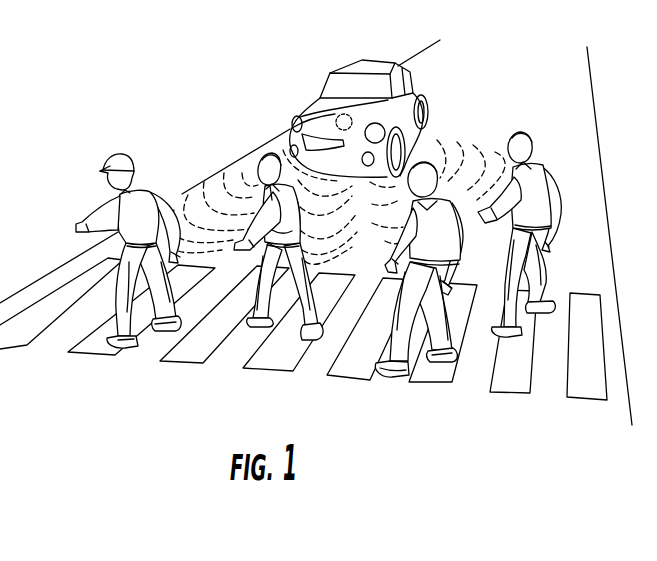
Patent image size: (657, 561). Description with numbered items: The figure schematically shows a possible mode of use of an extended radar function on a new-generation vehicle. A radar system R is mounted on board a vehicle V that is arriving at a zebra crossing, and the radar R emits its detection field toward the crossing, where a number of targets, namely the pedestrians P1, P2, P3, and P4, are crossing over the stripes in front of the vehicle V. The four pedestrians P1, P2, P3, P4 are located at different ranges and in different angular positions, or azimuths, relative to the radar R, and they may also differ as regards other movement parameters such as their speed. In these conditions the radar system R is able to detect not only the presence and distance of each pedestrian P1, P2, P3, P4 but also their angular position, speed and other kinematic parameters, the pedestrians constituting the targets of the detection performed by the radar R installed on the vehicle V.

The vehicle V is at (428, 86).
The radar system R is at (337, 123).
The pedestrian P1 is at (112, 208).
The pedestrian P2 is at (245, 333).
The pedestrian P3 is at (398, 380).
The pedestrian P4 is at (538, 170).